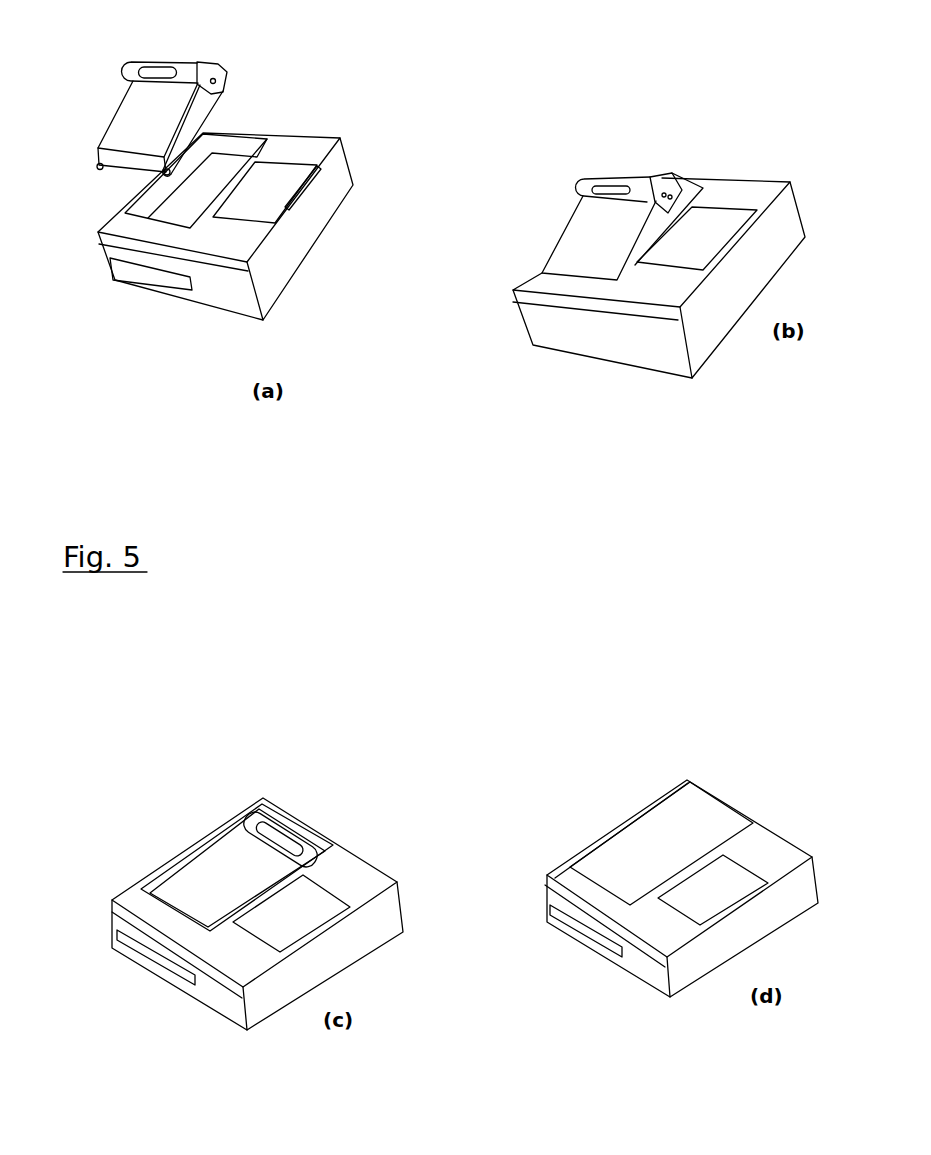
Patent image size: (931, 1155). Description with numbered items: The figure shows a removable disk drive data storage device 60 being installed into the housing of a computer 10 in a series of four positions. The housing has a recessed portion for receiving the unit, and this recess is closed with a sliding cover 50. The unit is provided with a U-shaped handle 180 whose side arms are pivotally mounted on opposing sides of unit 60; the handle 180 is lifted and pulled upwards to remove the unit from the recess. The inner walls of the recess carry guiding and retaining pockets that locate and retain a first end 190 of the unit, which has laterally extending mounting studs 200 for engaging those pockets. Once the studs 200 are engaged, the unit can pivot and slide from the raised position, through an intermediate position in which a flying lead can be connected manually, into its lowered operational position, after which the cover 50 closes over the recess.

The computer 10 is at (300, 277).
The sliding cover 50 is at (681, 827).
The removable disk drive data storage device 60 is at (218, 66).
The U-shaped handle 180 is at (131, 63).
The first end 190 is at (122, 143).
The mounting studs 200 is at (99, 170).